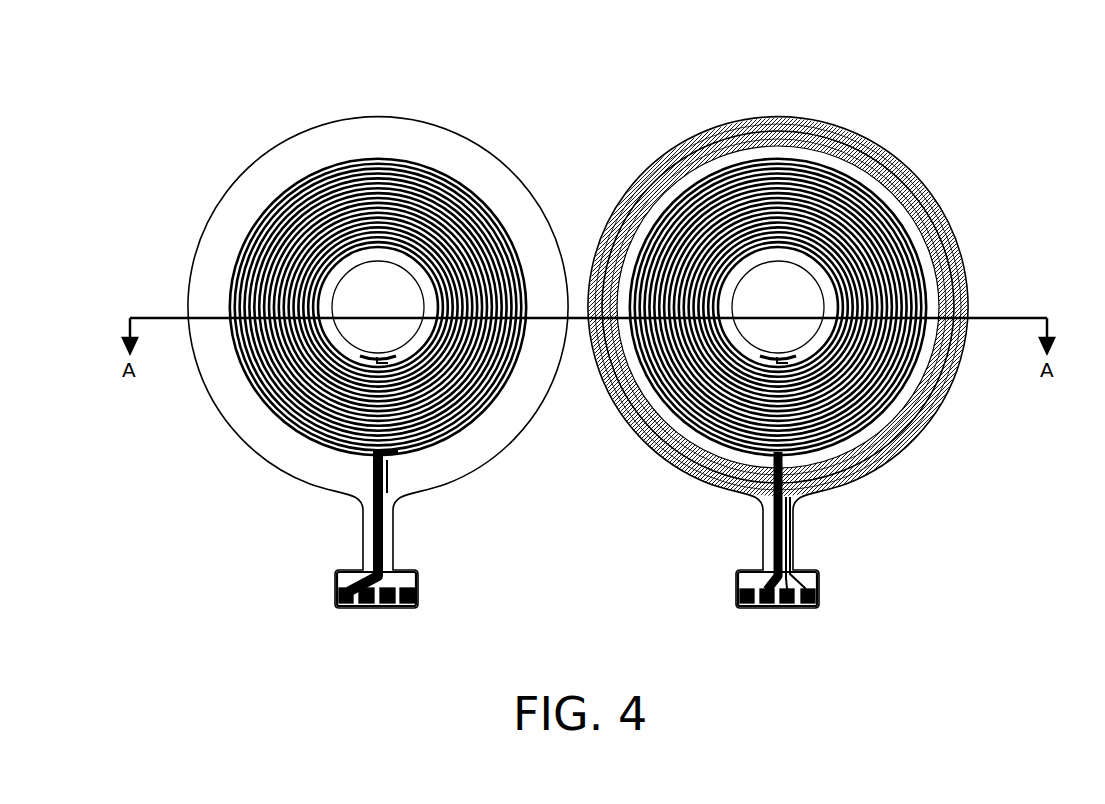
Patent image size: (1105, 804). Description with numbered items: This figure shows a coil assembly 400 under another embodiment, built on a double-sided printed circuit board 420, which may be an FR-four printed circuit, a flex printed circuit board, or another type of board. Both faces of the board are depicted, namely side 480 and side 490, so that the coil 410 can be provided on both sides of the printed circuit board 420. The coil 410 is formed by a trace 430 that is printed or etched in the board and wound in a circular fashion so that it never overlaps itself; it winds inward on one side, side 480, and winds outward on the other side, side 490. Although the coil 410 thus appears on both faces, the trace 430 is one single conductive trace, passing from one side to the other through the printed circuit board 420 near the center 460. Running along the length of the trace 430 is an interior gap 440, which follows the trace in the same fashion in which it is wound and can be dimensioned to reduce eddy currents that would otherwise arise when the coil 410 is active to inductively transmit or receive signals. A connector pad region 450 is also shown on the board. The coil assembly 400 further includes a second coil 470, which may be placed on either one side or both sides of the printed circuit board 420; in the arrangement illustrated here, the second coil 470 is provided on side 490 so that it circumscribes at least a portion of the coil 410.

The coil assembly 400 is at (889, 50).
The side 480 is at (246, 133).
The printed circuit board 420 is at (404, 116).
The coil 410 is at (477, 170).
The interior gap 440 is at (451, 444).
The trace 430 is at (367, 535).
The side 490 is at (933, 160).
The second coil 470 is at (884, 416).
The center 460 is at (804, 308).
The connector pad region 450 is at (838, 597).